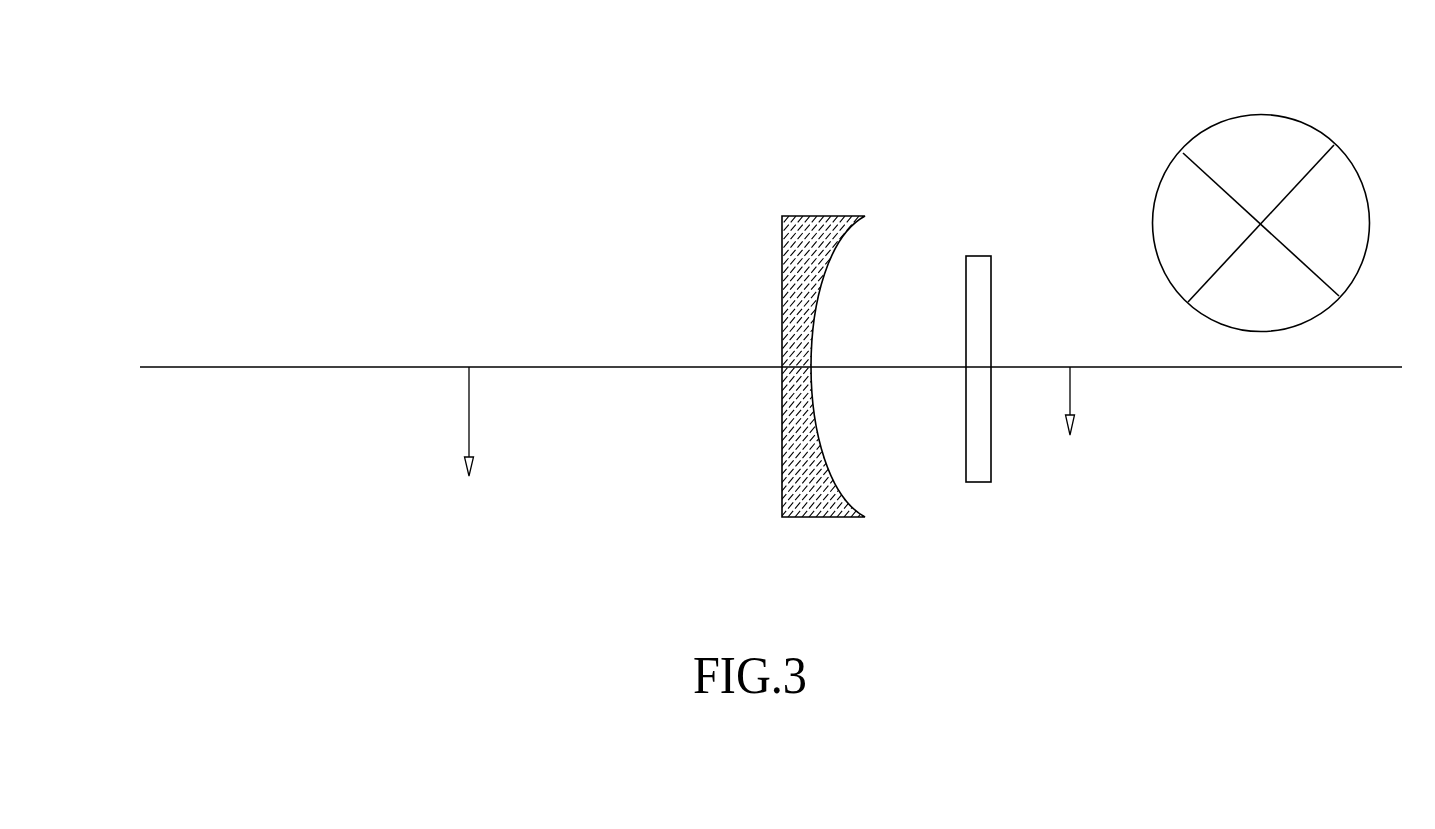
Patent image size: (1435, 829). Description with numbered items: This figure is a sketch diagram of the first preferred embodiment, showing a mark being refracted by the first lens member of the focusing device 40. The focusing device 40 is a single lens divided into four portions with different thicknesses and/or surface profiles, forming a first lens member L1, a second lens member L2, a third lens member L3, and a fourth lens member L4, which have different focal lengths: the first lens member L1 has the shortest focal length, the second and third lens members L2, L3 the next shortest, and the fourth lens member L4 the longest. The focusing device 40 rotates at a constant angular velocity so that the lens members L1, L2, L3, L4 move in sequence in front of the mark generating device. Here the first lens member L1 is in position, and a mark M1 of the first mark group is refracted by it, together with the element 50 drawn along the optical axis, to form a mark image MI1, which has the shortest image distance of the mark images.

The focusing device 40 is at (977, 256).
The lens 50 is at (820, 216).
The mark M1 is at (1075, 426).
The mark image MI1 is at (484, 446).
The first lens member L1 is at (1265, 283).
The second lens member L2 is at (1200, 225).
The third lens member L3 is at (1265, 158).
The fourth lens member L4 is at (1328, 221).